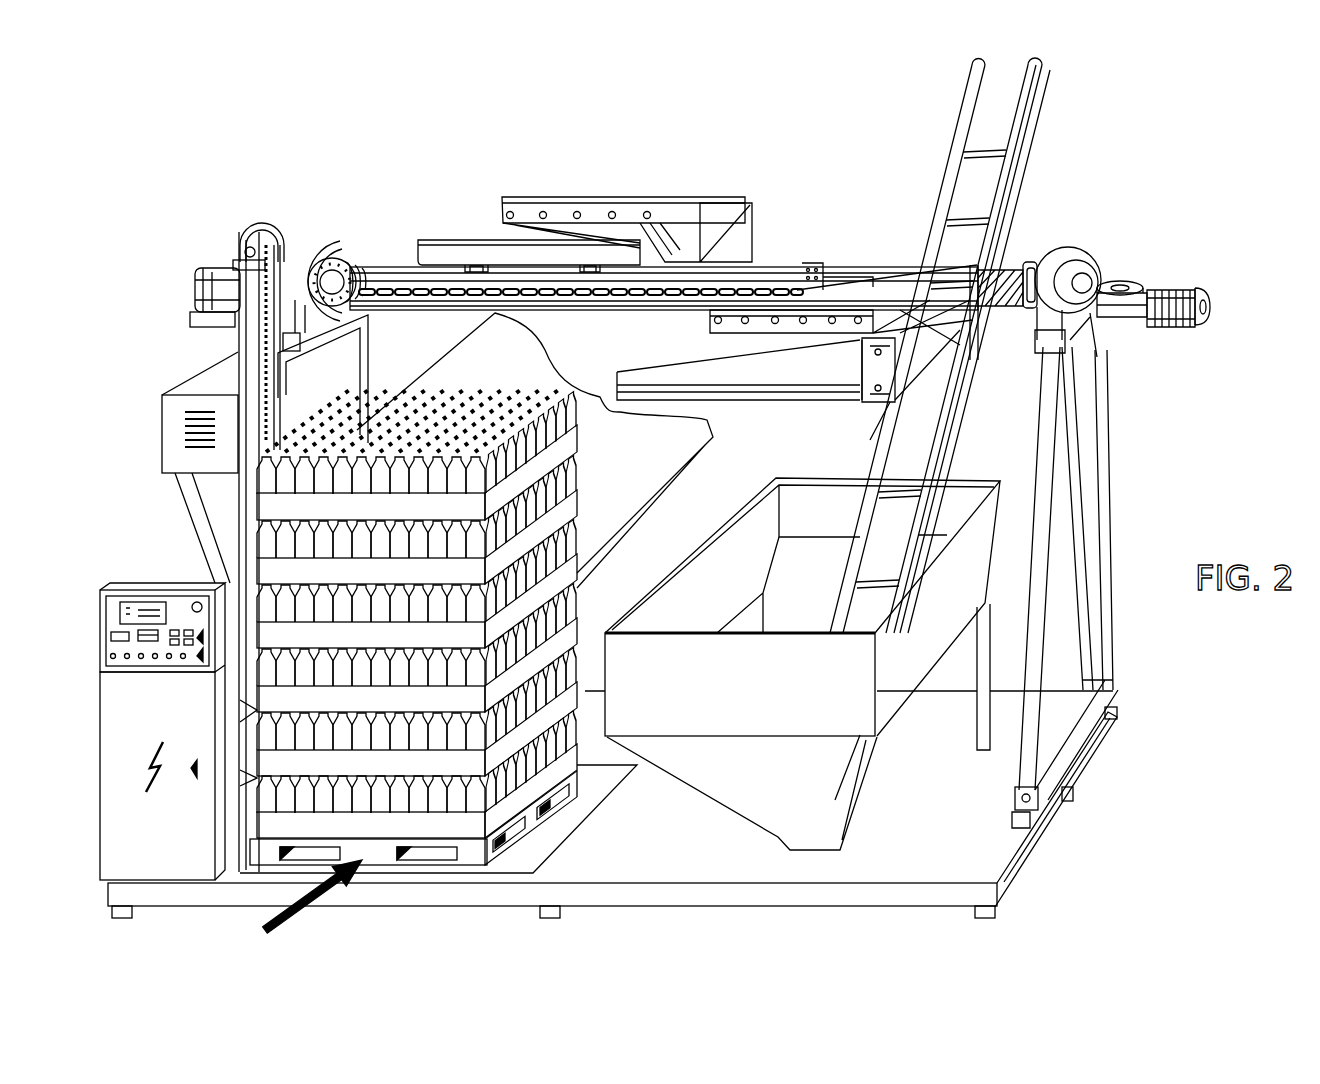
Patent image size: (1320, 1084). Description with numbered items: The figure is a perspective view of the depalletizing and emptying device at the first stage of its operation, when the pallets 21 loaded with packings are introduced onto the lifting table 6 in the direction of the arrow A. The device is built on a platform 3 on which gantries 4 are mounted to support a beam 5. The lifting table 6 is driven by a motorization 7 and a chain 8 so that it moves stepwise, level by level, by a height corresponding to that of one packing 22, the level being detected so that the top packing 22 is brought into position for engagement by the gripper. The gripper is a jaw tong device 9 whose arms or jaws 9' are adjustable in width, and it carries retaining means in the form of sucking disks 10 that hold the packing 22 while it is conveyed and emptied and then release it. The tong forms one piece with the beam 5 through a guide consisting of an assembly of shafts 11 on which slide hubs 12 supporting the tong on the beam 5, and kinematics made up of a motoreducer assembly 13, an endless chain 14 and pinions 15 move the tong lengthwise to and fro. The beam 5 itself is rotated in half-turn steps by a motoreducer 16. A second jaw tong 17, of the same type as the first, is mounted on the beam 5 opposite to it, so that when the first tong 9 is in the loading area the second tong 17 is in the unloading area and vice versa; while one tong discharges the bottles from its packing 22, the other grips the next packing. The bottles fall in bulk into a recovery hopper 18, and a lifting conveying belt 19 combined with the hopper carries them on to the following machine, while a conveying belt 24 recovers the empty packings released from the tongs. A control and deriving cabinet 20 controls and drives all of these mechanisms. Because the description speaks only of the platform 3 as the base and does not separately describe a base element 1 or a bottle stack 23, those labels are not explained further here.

The base frame 1 is at (824, 926).
The platform 3 is at (985, 838).
The gantries 4 is at (1098, 620).
The beam 5 is at (347, 258).
The lifting table 6 is at (423, 866).
The motorization 7 is at (175, 431).
The chain 8 is at (278, 398).
The jaw tong device 9 is at (739, 394).
The arms or jaws 9' is at (870, 389).
The sucking disks 10 is at (710, 317).
The shafts 11 is at (778, 270).
The hubs 12 is at (470, 265).
The motoreducer assembly 13 is at (1197, 292).
The endless chain 14 is at (997, 300).
The pinions 15 is at (1123, 280).
The motoreducer 16 is at (208, 272).
The second jaw tong 17 is at (553, 262).
The recovery hopper 18 is at (992, 538).
The lifting conveying belt 19 is at (1025, 168).
The control and deriving cabinet 20 is at (130, 708).
The pallets 21 is at (540, 815).
The packing 22 is at (560, 775).
The stack of bottle trays 23 is at (590, 487).
The conveying belt 24 is at (478, 380).
The arrow A is at (287, 925).